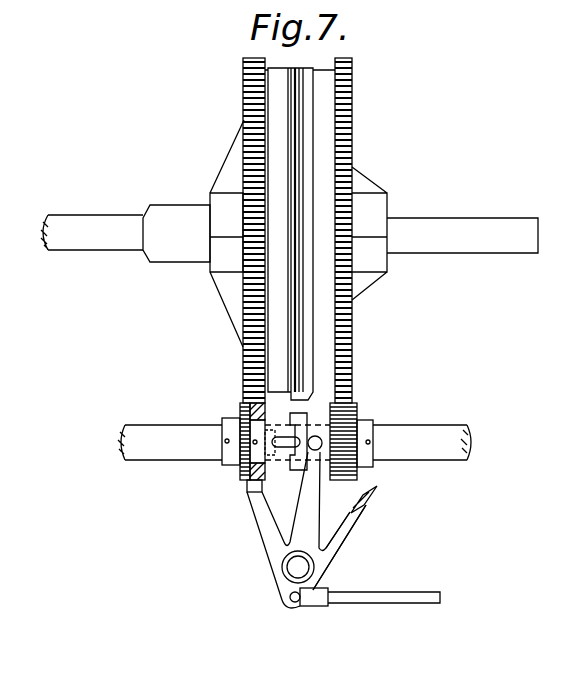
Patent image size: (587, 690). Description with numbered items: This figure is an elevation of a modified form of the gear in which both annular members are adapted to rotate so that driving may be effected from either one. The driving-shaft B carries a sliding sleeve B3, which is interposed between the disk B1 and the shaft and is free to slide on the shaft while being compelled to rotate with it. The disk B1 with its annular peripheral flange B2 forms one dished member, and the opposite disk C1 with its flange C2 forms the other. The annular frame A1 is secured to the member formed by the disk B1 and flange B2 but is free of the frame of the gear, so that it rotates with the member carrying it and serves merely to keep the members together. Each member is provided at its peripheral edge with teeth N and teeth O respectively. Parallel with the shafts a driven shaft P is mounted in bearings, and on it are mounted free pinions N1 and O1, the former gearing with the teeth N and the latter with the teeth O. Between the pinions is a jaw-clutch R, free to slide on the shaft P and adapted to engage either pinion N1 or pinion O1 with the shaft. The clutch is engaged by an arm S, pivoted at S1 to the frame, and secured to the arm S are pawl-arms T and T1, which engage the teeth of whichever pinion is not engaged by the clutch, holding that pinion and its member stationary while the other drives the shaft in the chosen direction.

The driving-shaft B is at (88, 242).
The disk B1 is at (231, 177).
The annular peripheral flange B2 is at (243, 70).
The sliding sleeve B3 is at (165, 233).
The annular frame A1 is at (282, 102).
The disk C1 is at (374, 176).
The annular peripheral flange C2 is at (320, 97).
The teeth N is at (243, 260).
The pinion N1 is at (263, 423).
The teeth O is at (353, 330).
The pinion O1 is at (357, 427).
The driven shaft P is at (432, 448).
The jaw-clutch R is at (253, 450).
The pawl-arm T is at (253, 512).
The pawl-arm T1 is at (333, 555).
The arm S is at (300, 519).
The pivot S1 is at (298, 567).